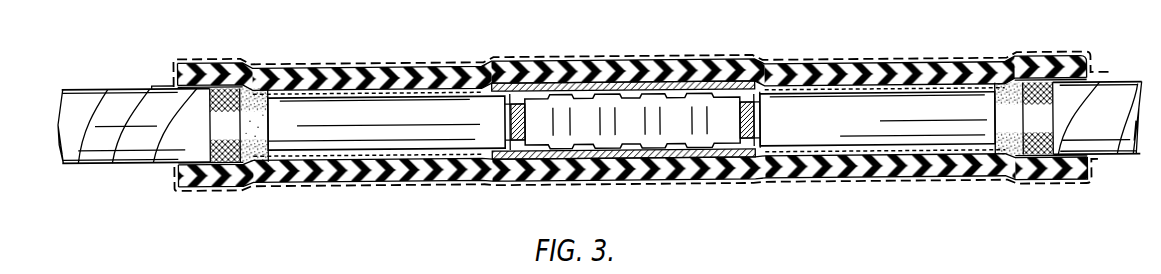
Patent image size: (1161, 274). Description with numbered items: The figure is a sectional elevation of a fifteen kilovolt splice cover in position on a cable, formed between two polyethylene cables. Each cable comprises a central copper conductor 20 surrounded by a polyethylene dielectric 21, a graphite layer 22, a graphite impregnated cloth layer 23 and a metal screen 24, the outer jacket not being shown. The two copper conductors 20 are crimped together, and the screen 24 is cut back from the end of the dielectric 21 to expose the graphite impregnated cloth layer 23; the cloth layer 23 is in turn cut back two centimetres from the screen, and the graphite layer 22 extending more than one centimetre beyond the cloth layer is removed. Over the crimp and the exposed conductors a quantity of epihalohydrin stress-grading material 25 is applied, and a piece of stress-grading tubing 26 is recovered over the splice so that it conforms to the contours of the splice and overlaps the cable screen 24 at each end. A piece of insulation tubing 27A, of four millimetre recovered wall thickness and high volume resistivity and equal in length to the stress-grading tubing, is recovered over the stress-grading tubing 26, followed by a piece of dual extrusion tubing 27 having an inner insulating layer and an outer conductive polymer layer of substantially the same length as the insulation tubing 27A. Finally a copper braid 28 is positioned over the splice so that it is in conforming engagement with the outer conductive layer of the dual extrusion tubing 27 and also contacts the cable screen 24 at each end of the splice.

The copper conductor 20 is at (520, 134).
The polyethylene dielectric 21 is at (402, 128).
The graphite layer 22 is at (257, 128).
The graphite impregnated cloth layer 23 is at (226, 138).
The metal screen 24 is at (96, 137).
The stress-grading material 25 is at (622, 150).
The stress-grading tubing 26 is at (917, 165).
The dual extrusion tubing 27 is at (750, 170).
The insulation tubing 27A is at (842, 158).
The copper braid 28 is at (1000, 182).